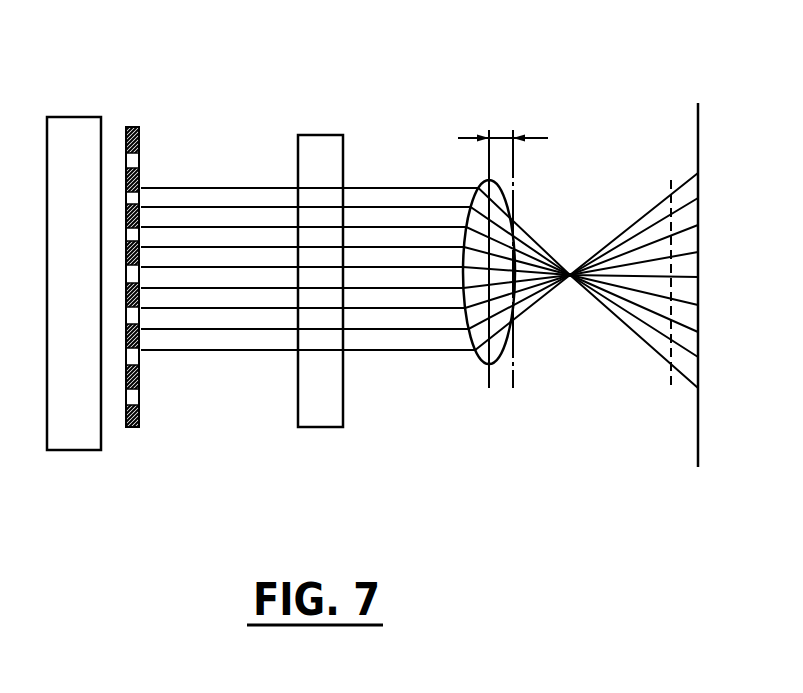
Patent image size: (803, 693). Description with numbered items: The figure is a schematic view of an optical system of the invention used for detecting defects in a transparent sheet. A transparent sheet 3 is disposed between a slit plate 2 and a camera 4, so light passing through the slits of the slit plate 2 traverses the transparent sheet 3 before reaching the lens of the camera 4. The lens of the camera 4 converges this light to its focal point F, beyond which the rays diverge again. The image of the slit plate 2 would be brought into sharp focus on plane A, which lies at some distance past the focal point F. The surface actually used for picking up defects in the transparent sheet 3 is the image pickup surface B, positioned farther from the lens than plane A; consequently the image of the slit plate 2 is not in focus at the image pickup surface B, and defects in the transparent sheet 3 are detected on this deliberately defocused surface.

The slit plate 2 is at (137, 127).
The transparent sheet 3 is at (318, 135).
The camera 4 is at (489, 181).
The focal point F is at (570, 258).
The plane A is at (670, 386).
The image pickup surface B is at (698, 402).